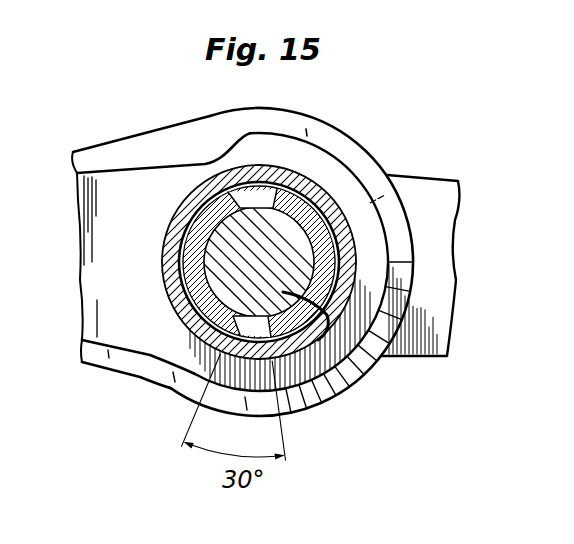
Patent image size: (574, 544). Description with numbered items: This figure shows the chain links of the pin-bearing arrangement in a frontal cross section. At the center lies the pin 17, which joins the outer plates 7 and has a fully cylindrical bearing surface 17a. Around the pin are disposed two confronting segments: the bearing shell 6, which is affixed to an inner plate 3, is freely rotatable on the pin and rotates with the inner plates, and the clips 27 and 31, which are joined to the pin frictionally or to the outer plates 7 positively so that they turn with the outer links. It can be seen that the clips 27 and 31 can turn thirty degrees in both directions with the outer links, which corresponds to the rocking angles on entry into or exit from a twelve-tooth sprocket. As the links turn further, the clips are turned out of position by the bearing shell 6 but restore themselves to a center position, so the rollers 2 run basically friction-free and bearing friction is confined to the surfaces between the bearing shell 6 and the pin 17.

The roller 2 is at (212, 187).
The inner plate 3 is at (115, 193).
The bearing shell 6 is at (313, 187).
The outer plate 7 is at (435, 205).
The pin 17 is at (322, 365).
The bearing surface 17a is at (255, 190).
The clip 27 is at (162, 366).
The clip 31 is at (172, 322).